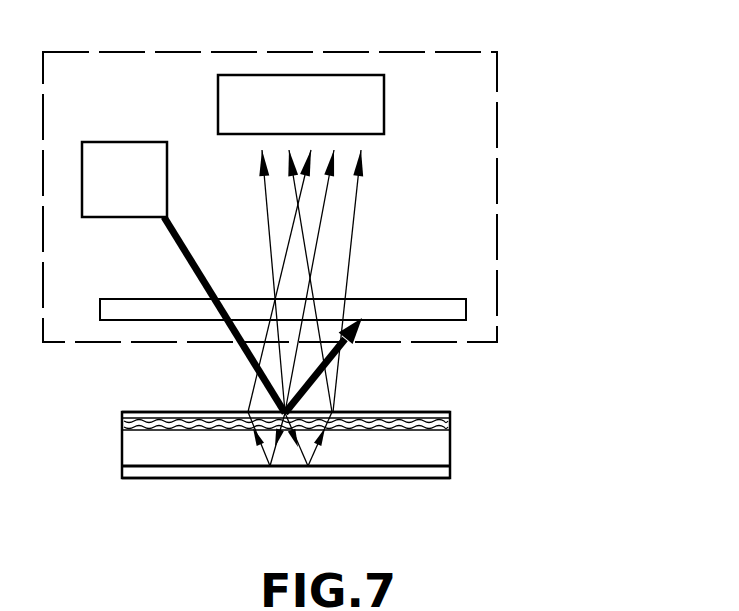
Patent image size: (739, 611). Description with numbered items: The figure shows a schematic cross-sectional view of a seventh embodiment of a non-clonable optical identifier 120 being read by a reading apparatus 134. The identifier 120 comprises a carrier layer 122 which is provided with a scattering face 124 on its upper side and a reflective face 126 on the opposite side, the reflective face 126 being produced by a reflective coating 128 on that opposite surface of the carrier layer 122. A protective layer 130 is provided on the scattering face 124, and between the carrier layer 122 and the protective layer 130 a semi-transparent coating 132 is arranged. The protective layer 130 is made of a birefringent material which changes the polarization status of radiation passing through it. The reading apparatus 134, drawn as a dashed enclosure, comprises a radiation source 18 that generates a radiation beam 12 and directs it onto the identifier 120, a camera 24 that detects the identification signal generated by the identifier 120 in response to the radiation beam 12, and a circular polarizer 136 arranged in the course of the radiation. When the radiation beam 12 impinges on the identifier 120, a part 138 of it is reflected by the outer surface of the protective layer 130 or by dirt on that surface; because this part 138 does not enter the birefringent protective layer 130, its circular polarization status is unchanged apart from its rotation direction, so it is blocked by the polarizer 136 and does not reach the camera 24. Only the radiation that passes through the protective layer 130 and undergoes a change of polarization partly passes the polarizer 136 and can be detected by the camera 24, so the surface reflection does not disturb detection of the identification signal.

The radiation beam 12 is at (187, 246).
The radiation source 18 is at (125, 142).
The camera 24 is at (291, 75).
The non-clonable optical identifier 120 is at (318, 448).
The carrier layer 122 is at (452, 457).
The scattering face 124 is at (133, 427).
The reflective face 126 is at (413, 459).
The reflective coating 128 is at (176, 479).
The protective layer 130 is at (430, 413).
The semi-transparent coating 132 is at (173, 412).
The reading apparatus 134 is at (497, 128).
The polarizer 136 is at (432, 299).
The part of the radiation beam 138 is at (346, 348).